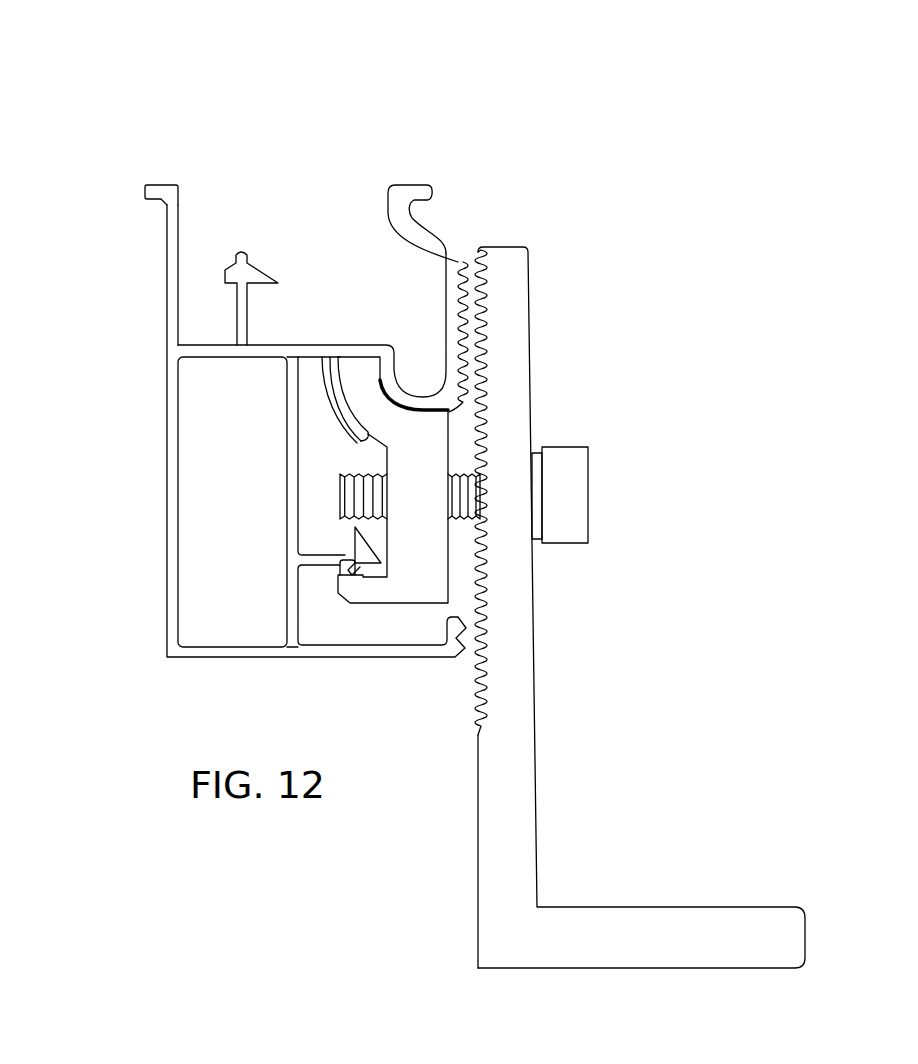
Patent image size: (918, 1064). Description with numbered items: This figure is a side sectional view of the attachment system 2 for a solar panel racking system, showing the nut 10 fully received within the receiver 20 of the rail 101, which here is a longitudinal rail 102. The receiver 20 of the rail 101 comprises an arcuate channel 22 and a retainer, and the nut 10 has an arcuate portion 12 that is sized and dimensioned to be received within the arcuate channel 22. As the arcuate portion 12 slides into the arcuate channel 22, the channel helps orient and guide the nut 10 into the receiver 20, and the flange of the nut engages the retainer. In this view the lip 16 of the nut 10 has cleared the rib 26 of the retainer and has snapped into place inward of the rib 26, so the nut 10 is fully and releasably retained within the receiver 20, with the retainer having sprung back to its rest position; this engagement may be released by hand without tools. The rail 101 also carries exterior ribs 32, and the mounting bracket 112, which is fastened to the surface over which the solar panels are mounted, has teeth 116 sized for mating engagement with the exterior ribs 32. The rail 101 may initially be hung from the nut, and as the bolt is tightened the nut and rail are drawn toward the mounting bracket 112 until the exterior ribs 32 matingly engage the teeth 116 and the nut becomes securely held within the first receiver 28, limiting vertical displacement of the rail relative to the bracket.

The attachment system 2 is at (168, 52).
The rail 101 is at (175, 252).
The longitudinal rail 102 is at (173, 230).
The receiver 20 is at (372, 463).
The first receiver 28 is at (372, 453).
The arcuate channel 22 is at (348, 362).
The arcuate portion 12 is at (363, 403).
The exterior ribs 32 is at (463, 262).
The nut 10 is at (435, 510).
The lip 16 is at (355, 560).
The rib 26 is at (363, 590).
The mounting bracket 112 is at (534, 892).
The teeth 116 is at (478, 693).